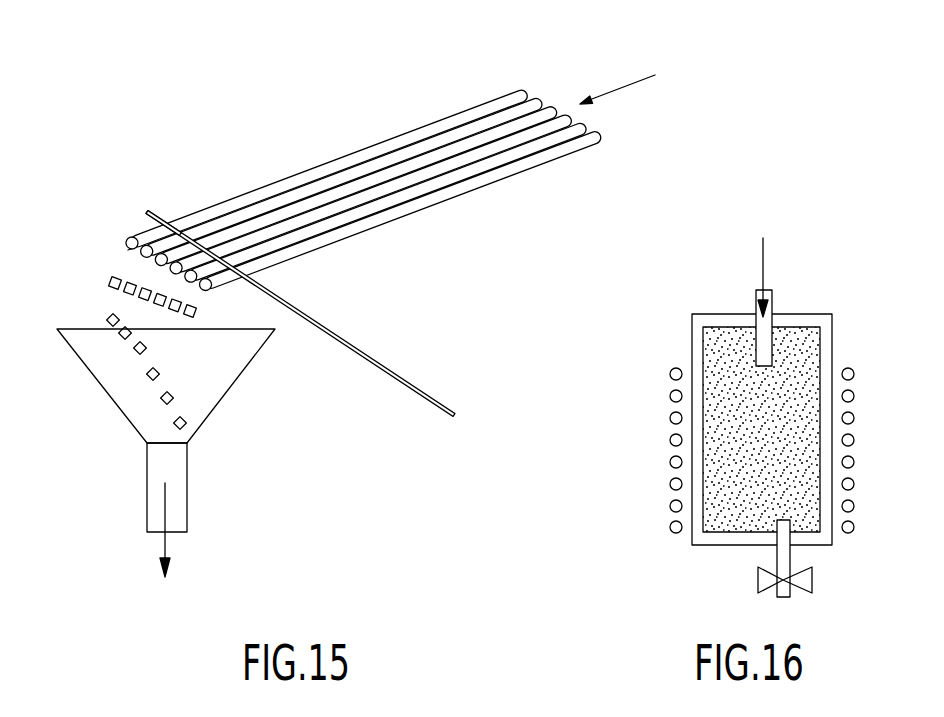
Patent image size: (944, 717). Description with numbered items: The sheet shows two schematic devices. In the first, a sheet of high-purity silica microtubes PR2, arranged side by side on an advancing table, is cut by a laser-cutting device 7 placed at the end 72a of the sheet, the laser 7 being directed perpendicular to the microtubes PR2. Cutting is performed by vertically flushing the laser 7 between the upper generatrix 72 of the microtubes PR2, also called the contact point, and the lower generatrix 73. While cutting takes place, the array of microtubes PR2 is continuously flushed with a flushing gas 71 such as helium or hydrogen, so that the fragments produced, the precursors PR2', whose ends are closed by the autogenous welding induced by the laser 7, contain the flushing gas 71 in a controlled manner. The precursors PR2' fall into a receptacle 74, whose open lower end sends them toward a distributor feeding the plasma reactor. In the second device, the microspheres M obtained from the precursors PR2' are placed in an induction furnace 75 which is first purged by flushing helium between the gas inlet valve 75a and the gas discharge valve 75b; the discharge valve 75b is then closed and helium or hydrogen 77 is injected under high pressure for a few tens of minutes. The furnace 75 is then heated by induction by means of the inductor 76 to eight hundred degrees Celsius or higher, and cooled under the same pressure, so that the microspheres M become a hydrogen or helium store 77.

In FIG. 15, the laser-cutting device 7 is at (406, 374).
In FIG. 15, the flushing gas 71 is at (655, 77).
In FIG. 15, the upper generatrix 72 is at (133, 236).
In FIG. 15, the end of the sheet of microtubes 72a is at (164, 219).
In FIG. 15, the lower generatrix 73 is at (130, 252).
In FIG. 15, the receptacle 74 is at (128, 400).
In FIG. 15, the microtubes PR2 is at (353, 190).
In FIG. 15, the precursors PR2' is at (150, 415).
In FIG. 16, the induction furnace 75 is at (737, 415).
In FIG. 16, the gas inlet valve 75a is at (772, 298).
In FIG. 16, the gas discharge valve 75b is at (775, 553).
In FIG. 16, the inductor 76 is at (668, 394).
In FIG. 16, the hydrogen or helium 77 is at (762, 265).
In FIG. 16, the microspheres M is at (808, 355).